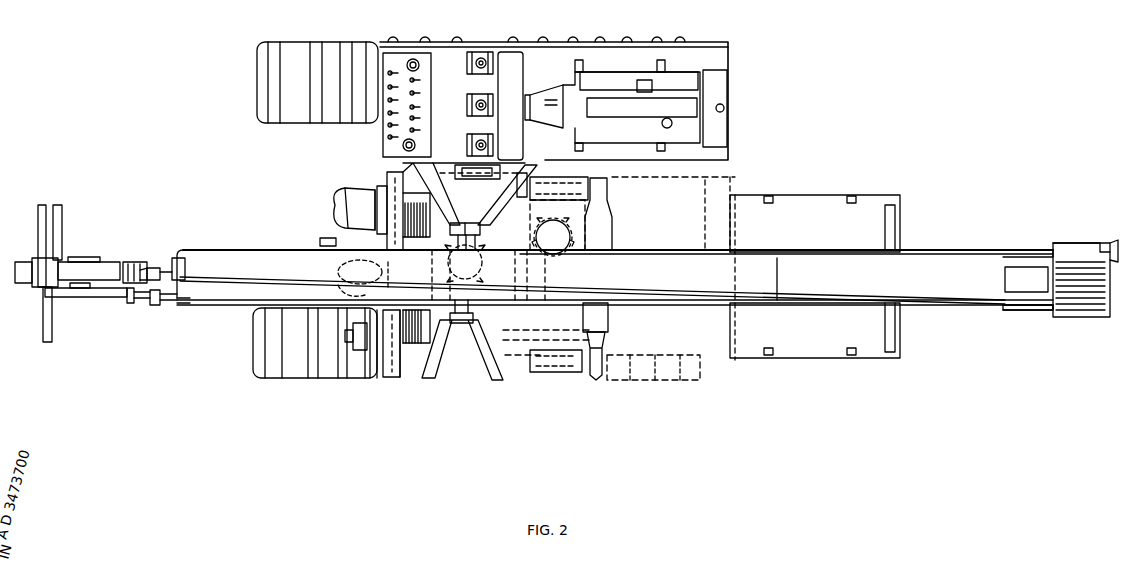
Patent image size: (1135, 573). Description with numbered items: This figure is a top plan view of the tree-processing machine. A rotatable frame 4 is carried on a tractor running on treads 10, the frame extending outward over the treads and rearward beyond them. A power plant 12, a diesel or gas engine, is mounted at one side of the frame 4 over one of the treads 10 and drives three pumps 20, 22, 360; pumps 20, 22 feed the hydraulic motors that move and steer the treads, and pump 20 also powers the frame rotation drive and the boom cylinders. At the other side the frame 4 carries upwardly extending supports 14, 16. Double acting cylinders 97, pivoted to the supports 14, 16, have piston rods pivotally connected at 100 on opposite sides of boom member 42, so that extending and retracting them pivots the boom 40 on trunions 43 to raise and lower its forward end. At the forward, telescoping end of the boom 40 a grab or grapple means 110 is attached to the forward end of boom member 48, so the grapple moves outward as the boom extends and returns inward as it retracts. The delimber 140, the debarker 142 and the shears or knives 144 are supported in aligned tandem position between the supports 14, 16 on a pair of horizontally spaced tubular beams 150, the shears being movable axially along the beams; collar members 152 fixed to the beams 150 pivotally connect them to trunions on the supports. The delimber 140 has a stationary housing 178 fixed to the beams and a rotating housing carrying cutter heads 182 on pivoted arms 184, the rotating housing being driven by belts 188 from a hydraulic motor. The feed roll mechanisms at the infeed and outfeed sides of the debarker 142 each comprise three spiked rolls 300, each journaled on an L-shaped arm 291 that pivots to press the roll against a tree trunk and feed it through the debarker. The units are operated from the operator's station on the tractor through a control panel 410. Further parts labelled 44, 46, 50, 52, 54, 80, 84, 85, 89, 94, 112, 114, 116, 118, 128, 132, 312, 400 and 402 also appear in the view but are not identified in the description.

The frame 4 is at (872, 345).
The treads 10 is at (302, 45).
The power plant 12 is at (690, 70).
The upwardly extending support 14 is at (425, 380).
The upwardly extending support 16 is at (395, 172).
The pump 20 is at (480, 50).
The pump 22 is at (467, 145).
The boom 40 is at (843, 238).
The boom member 42 is at (240, 250).
The trunions 43 is at (476, 222).
The coupling 44 is at (158, 305).
The coupling block 46 is at (131, 303).
The boom member 48 is at (100, 297).
The clamp block 50 is at (178, 258).
The connector 52 is at (153, 268).
The splined coupling 54 is at (133, 262).
The end fitting 80 is at (1084, 280).
The guide strip 84 is at (1038, 312).
The stop tab 85 is at (1114, 242).
The tube 89 is at (648, 290).
The housing 94 is at (110, 262).
The double acting cylinders 97 is at (380, 272).
The pivotal connection 100 is at (328, 238).
The grab or grapple means 110 is at (25, 258).
The upright bar 112 is at (38, 215).
The upright bar 114 is at (65, 212).
The lower bar 116 is at (52, 330).
The tab 118 is at (88, 257).
The rail lines 128 is at (183, 306).
The bearing housing 132 is at (608, 318).
The delimber 140 is at (385, 189).
The debarker 142 is at (521, 236).
The shears 144 is at (697, 236).
The tubular beams 150 is at (546, 176).
The collar members 152 is at (441, 375).
The stationary housing 178 is at (385, 372).
The cutter heads 182 is at (336, 199).
The arm 184 is at (350, 370).
The belts 188 is at (385, 375).
The L-shaped arm 291 is at (565, 220).
The spiked rolls 300 is at (612, 240).
The lower housing 312 is at (596, 380).
The pump 360 is at (467, 100).
The mounting pads 400 is at (847, 199).
The end bar 402 is at (895, 212).
The control panel 410 is at (403, 52).